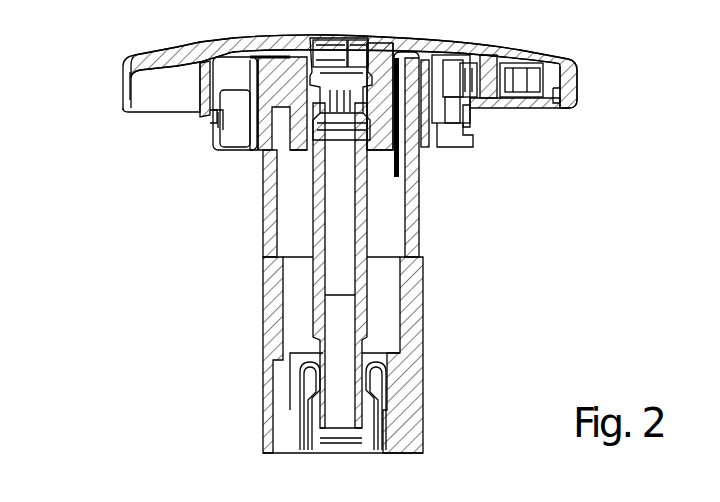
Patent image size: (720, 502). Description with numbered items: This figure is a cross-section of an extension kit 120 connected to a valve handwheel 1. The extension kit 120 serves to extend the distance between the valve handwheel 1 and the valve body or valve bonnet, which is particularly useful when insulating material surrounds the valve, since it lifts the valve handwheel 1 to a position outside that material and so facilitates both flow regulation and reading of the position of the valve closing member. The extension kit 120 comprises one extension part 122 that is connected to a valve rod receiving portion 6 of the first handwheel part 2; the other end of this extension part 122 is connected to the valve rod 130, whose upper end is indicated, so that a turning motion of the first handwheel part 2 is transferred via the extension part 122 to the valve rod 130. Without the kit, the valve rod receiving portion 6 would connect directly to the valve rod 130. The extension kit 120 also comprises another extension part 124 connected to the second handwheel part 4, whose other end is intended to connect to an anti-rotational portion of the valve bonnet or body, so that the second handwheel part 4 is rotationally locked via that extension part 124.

The valve handwheel 1 is at (98, 123).
The first handwheel part 2 is at (178, 50).
The second handwheel part 4 is at (413, 182).
The valve rod receiving portion 6 is at (312, 124).
The extension kit 120 is at (240, 365).
The extension part 122 is at (315, 217).
The another extension part 124 is at (413, 330).
The valve rod 130 is at (363, 447).